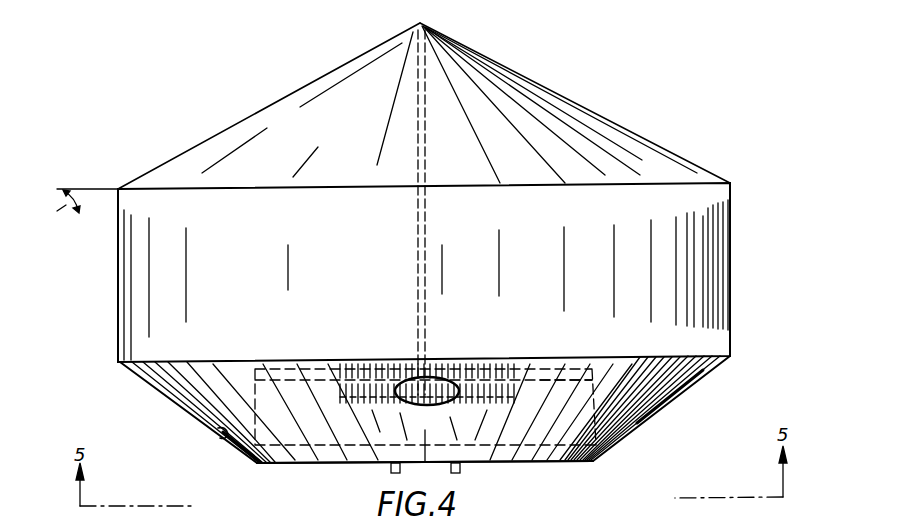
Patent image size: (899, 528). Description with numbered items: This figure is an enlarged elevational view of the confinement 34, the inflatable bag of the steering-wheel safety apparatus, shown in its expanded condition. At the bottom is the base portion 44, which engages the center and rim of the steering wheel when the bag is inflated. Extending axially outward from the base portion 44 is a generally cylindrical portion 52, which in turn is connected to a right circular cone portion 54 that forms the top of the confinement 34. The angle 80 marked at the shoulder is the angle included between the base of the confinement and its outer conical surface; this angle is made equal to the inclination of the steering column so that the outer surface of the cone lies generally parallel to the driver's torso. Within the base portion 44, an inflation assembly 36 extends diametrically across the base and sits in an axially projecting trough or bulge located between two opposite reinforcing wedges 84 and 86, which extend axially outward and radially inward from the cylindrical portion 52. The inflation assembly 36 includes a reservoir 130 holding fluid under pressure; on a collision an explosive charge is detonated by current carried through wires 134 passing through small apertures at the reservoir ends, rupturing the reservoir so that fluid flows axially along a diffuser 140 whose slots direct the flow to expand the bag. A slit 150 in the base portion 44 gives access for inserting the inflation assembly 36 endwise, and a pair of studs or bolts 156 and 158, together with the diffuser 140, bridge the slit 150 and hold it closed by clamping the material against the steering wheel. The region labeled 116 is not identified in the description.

The confinement 34 is at (198, 78).
The right circular cone portion 54 is at (641, 131).
The angle 80 is at (51, 208).
The cylindrical portion 52 is at (729, 277).
The base portion 44 is at (695, 400).
The reinforcing wedge 84 is at (190, 406).
The reinforcing wedge 86 is at (702, 372).
The wire 134 is at (230, 436).
The inflation assembly 36 is at (296, 471).
The diffuser 140 is at (295, 356).
The opening 116 is at (441, 376).
The reservoir 130 is at (632, 350).
The slit 150 is at (441, 420).
The stud or bolt 156 is at (390, 471).
The stud or bolt 158 is at (461, 468).